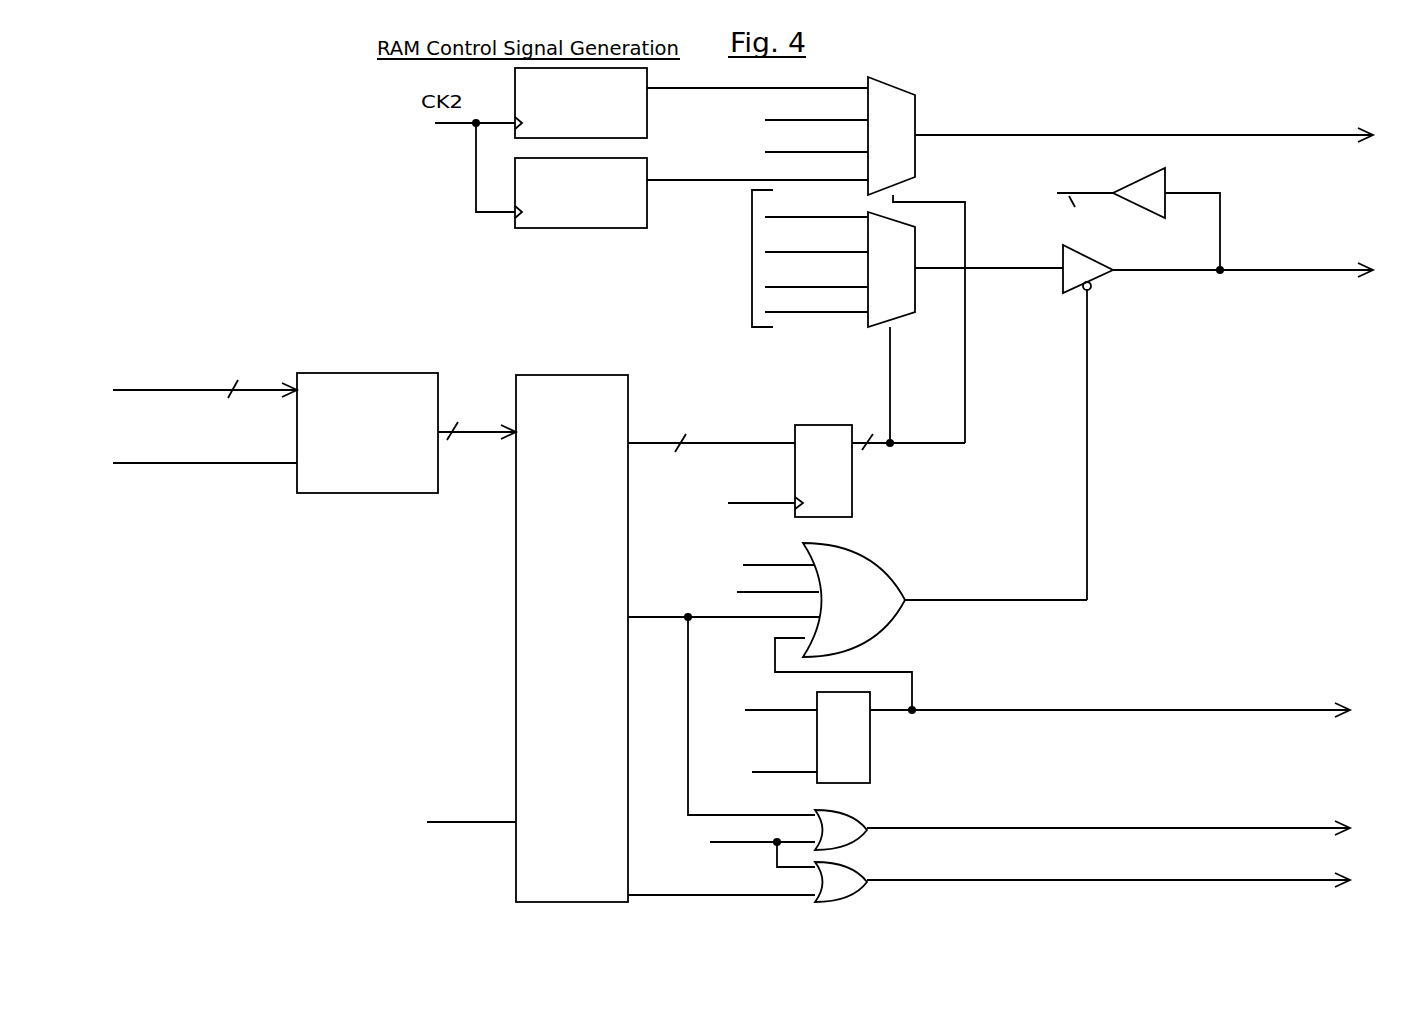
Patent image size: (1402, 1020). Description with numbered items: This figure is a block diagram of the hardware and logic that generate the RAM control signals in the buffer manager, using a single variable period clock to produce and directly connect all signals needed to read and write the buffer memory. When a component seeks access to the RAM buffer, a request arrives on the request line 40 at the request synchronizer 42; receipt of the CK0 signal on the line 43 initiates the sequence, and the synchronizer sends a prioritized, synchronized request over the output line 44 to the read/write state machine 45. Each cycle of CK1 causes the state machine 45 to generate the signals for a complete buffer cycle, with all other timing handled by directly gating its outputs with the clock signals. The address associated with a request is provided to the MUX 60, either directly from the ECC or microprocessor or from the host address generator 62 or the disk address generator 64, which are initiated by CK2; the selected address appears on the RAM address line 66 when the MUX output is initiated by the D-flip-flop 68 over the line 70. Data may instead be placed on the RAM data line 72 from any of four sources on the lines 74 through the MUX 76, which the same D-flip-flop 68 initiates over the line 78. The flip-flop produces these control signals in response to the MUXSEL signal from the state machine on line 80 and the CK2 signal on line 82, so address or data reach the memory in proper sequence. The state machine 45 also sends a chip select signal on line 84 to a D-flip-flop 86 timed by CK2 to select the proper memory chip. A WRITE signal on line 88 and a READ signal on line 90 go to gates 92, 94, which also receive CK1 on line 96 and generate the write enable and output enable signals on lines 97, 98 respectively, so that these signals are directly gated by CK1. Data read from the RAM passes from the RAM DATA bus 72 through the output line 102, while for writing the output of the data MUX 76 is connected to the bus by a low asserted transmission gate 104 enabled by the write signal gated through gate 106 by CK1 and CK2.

The request line 40 is at (145, 392).
The request synchronizer 42 is at (328, 383).
The CK0 line 43 is at (150, 465).
The output line 44 is at (465, 440).
The read/write state machine 45 is at (525, 580).
The MUX 60 is at (908, 152).
The host address generator 62 is at (641, 87).
The disk address generator 64 is at (641, 177).
The RAM address line 66 is at (1247, 137).
The D-flip-flop 68 is at (852, 497).
The line 70 is at (967, 323).
The RAM data line 72 is at (1253, 273).
The lines 74 is at (752, 257).
The MUX 76 is at (910, 242).
The line 78 is at (897, 340).
The line 80 is at (645, 442).
The line 82 is at (750, 505).
The line 84 is at (755, 713).
The D-flip-flop 86 is at (870, 763).
The line 88 is at (678, 622).
The line 90 is at (722, 893).
The gate 92 is at (857, 822).
The gate 94 is at (857, 873).
The line 96 is at (715, 844).
The line 97 is at (1048, 828).
The line 98 is at (1045, 880).
The output line 102 is at (1187, 191).
The transmission gate 104 is at (1100, 279).
The gate 106 is at (868, 561).